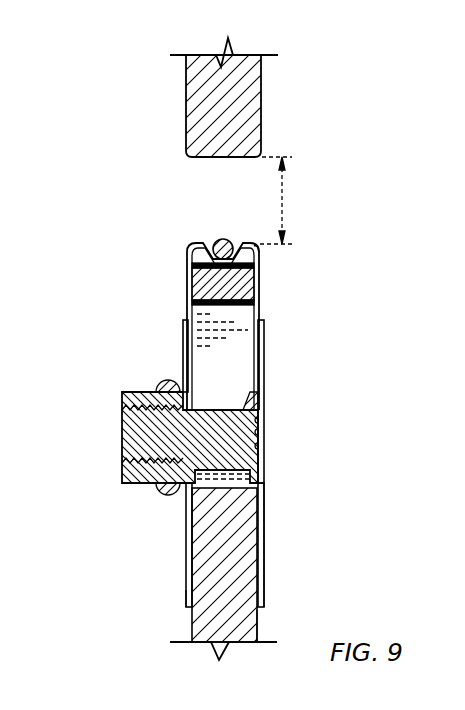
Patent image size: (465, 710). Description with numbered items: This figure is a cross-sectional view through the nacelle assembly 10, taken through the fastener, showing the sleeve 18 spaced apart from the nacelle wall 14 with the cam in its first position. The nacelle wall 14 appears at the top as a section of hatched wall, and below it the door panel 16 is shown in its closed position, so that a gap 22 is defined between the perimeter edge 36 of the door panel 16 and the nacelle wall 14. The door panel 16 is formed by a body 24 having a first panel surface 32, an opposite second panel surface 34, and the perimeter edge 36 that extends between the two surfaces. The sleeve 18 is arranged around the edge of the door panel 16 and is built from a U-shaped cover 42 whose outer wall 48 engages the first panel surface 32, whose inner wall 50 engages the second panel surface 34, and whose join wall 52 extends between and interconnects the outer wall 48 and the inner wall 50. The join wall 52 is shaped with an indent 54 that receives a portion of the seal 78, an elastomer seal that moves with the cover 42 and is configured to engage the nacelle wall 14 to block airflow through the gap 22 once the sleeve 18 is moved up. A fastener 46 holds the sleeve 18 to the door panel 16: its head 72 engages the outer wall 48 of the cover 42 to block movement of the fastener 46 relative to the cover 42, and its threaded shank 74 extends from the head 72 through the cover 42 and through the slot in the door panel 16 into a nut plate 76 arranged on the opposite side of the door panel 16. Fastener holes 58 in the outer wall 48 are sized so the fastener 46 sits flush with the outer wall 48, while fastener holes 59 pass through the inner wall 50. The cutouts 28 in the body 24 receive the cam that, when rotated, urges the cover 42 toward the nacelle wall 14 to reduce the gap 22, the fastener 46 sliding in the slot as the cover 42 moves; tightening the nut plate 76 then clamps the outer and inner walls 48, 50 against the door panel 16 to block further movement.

The nacelle assembly 10 is at (112, 98).
The nacelle wall 14 is at (266, 128).
The door panel 16 is at (168, 616).
The sleeve 18 is at (98, 440).
The gap 22 is at (284, 205).
The body 24 is at (188, 632).
The cutouts 28 is at (224, 343).
The first panel surface 32 is at (258, 625).
The second panel surface 34 is at (190, 613).
The perimeter edge 36 is at (262, 247).
The U-shaped cover 42 is at (183, 522).
The fastener 46 is at (312, 445).
The outer wall 48 is at (262, 575).
The inner wall 50 is at (183, 560).
The join wall 52 is at (184, 241).
The indent 54 is at (190, 293).
The fastener holes 58 is at (266, 380).
The fastener holes 59 is at (261, 491).
The head 72 is at (266, 410).
The shank 74 is at (122, 445).
The nut plate 76 is at (118, 388).
The seal 78 is at (216, 238).